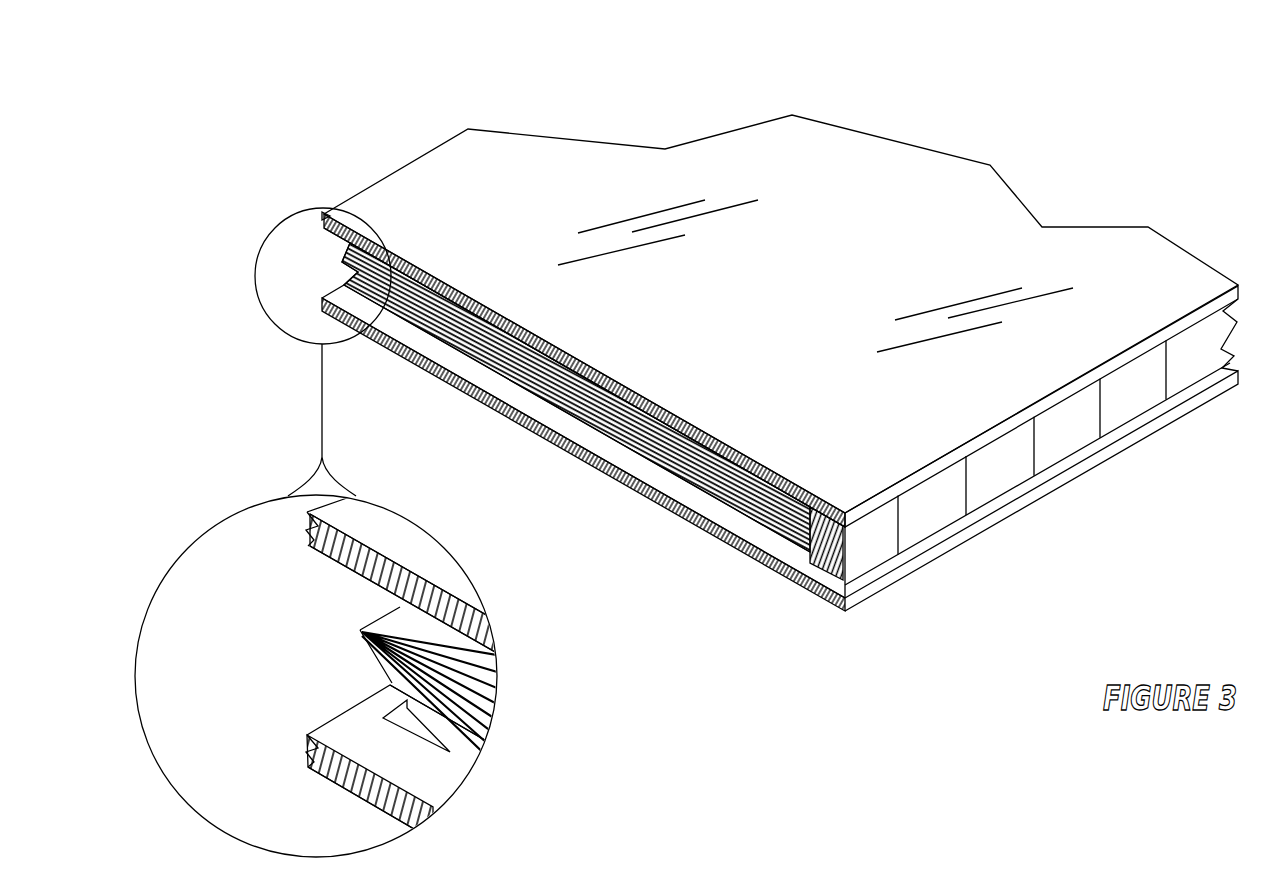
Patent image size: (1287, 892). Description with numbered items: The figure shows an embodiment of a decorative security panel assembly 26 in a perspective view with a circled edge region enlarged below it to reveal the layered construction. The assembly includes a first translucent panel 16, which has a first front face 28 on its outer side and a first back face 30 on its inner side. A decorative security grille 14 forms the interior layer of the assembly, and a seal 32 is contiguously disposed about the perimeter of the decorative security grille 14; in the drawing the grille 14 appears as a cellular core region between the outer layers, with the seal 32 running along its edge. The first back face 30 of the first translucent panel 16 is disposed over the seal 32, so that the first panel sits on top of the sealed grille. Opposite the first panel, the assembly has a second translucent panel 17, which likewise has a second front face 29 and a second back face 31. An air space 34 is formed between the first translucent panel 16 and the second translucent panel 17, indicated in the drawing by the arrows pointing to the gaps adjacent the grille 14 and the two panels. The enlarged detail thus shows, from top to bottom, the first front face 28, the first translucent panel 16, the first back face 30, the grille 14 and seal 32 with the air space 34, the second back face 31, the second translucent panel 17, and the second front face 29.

The decorative security grille 14 is at (597, 417).
The first translucent panel 16 is at (316, 556).
The second translucent panel 17 is at (316, 776).
The decorative security panel assembly 26 is at (258, 159).
The first front face 28 is at (390, 519).
The second front face 29 is at (337, 787).
The first back face 30 is at (337, 565).
The second back face 31 is at (337, 727).
The seal 32 is at (940, 505).
The air space 34 is at (692, 450).